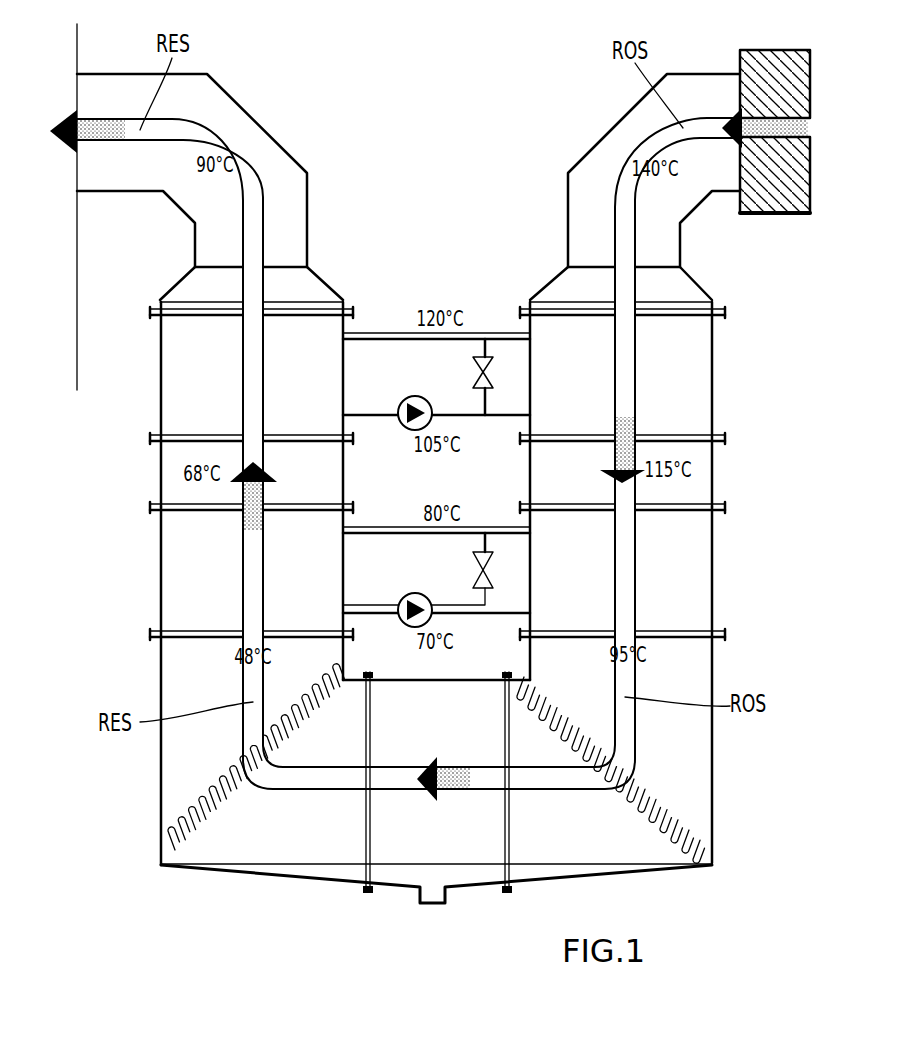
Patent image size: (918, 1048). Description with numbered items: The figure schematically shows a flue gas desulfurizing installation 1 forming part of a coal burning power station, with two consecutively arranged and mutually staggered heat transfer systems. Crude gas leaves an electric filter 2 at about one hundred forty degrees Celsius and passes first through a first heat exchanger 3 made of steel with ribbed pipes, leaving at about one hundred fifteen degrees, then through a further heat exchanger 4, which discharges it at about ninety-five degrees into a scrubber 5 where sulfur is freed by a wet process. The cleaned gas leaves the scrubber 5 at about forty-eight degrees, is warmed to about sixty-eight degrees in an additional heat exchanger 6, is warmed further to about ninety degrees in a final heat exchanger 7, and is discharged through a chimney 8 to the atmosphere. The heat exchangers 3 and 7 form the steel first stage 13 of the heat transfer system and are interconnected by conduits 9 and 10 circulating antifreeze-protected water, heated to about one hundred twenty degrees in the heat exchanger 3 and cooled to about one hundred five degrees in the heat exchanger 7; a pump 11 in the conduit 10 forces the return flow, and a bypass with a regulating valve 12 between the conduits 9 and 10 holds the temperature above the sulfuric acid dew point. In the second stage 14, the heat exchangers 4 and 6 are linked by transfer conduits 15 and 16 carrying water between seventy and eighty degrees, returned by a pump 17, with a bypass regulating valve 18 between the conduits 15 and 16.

The installation 1 is at (460, 132).
The electric filter 2 is at (778, 50).
The first heat exchanger 3 is at (688, 345).
The further heat exchanger 4 is at (678, 547).
The scrubber 5 is at (420, 842).
The additional heat exchanger 6 is at (193, 579).
The final heat exchanger 7 is at (188, 393).
The chimney 8 is at (105, 88).
The conduit 9 is at (370, 333).
The conduit 10 is at (367, 412).
The pump 11 is at (410, 397).
The regulating valve 12 is at (477, 369).
The first stage 13 is at (730, 377).
The second stage 14 is at (723, 572).
The transfer conduit 15 is at (375, 528).
The transfer conduit 16 is at (357, 607).
The pump 17 is at (408, 595).
The regulating valve 18 is at (477, 568).